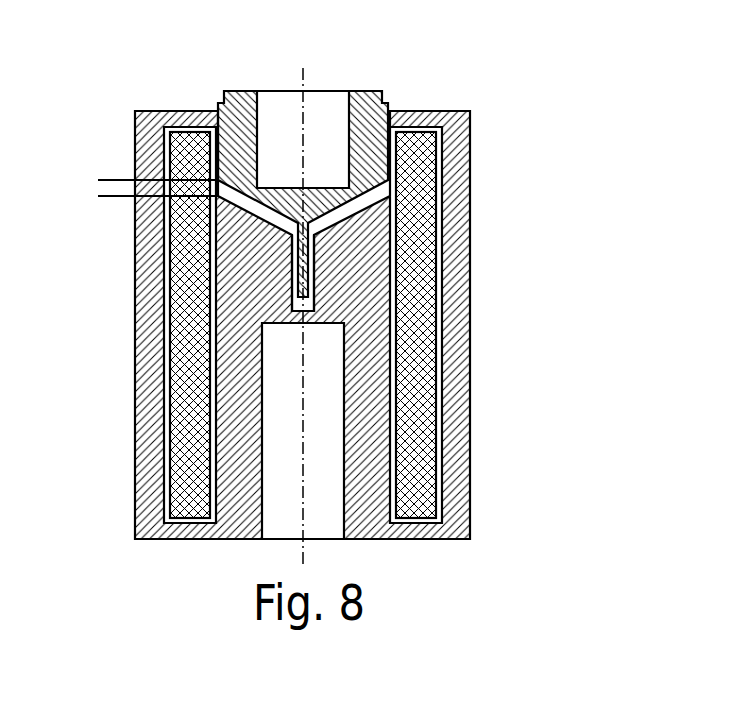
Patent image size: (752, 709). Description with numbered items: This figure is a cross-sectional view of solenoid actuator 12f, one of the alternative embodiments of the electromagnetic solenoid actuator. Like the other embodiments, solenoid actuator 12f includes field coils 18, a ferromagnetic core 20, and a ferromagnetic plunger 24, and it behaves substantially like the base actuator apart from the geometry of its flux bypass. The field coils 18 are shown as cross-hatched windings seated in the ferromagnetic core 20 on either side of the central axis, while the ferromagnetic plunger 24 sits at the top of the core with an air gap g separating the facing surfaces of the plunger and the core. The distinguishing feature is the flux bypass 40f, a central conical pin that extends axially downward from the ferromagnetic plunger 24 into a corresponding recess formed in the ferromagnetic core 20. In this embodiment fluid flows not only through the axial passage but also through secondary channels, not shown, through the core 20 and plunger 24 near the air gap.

The solenoid actuator 12f is at (496, 77).
The ferromagnetic core 20 is at (145, 308).
The ferromagnetic plunger 24 is at (220, 102).
The field coils 18 is at (190, 397).
The flux bypass 40f is at (308, 267).
The gap g is at (107, 153).